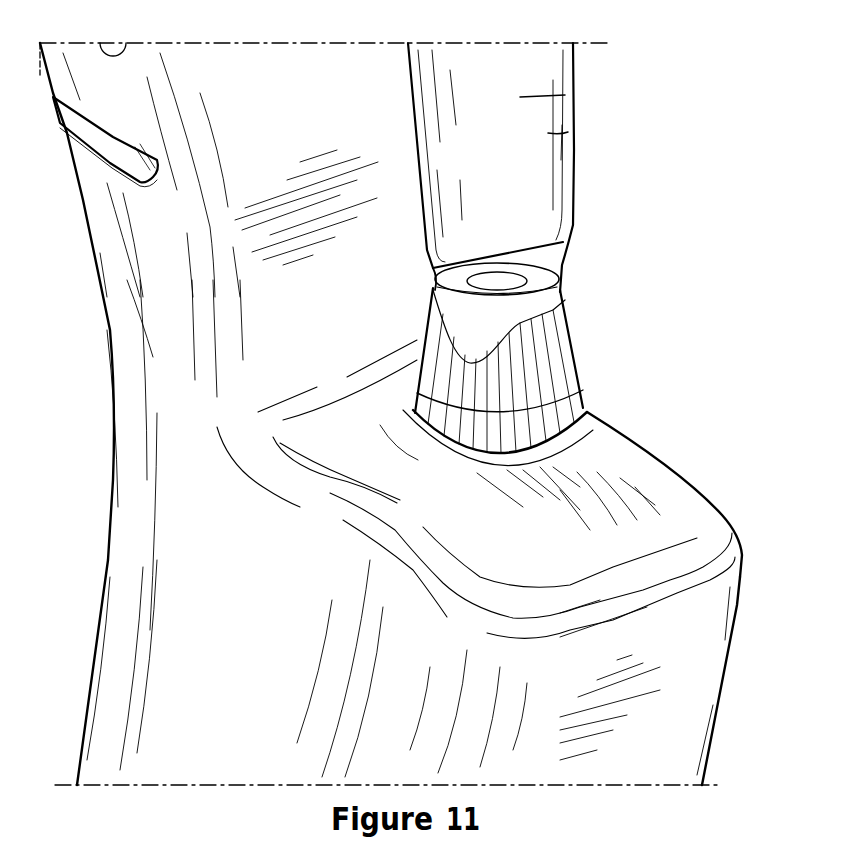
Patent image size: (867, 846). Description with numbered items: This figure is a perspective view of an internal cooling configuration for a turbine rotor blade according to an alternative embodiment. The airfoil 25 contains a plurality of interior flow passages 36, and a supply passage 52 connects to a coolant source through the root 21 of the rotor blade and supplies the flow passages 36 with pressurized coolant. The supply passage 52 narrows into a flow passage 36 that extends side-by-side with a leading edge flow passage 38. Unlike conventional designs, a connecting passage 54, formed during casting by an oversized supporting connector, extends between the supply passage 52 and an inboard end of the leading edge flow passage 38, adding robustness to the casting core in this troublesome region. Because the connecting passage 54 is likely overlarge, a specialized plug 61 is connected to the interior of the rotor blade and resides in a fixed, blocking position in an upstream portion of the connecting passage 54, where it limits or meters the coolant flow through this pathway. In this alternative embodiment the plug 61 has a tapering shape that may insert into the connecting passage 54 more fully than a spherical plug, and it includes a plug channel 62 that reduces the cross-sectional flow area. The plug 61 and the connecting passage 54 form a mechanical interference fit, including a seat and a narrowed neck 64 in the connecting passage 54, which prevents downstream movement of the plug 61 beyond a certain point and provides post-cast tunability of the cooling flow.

The root 21 is at (738, 644).
The airfoil 25 is at (661, 110).
The flow passage 36 is at (284, 93).
The leading edge flow passage 38 is at (548, 133).
The supply passage 52 is at (655, 488).
The connecting passage 54 is at (686, 235).
The plug 61 is at (548, 385).
The plug channel 62 is at (530, 282).
The neck 64 is at (585, 228).